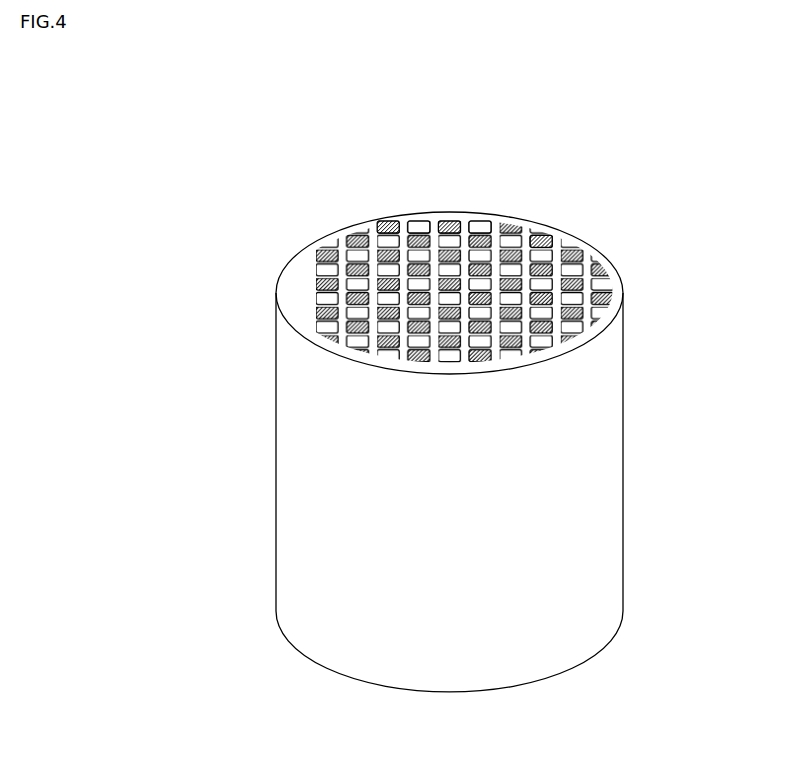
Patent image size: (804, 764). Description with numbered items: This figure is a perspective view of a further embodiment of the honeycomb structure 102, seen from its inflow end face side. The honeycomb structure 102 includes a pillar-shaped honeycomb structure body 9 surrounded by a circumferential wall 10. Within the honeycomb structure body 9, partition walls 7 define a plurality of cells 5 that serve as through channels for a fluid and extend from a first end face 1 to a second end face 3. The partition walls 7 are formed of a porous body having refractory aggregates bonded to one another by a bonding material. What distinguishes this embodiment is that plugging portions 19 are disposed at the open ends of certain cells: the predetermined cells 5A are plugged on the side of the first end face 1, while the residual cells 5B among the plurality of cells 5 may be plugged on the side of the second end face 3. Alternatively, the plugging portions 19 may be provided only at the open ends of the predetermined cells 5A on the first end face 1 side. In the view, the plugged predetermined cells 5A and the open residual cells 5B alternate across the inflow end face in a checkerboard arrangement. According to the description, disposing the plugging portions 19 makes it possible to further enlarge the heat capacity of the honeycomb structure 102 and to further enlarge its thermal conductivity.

The first end face 1 is at (323, 230).
The second end face 3 is at (315, 663).
The cell 5 is at (469, 292).
The predetermined cell 5A is at (450, 221).
The residual cell 5B is at (482, 222).
The partition wall 7 is at (403, 232).
The honeycomb structure body 9 is at (527, 232).
The circumferential wall 10 is at (617, 293).
The plugging portion 19 is at (578, 250).
The honeycomb structure 102 is at (762, 167).